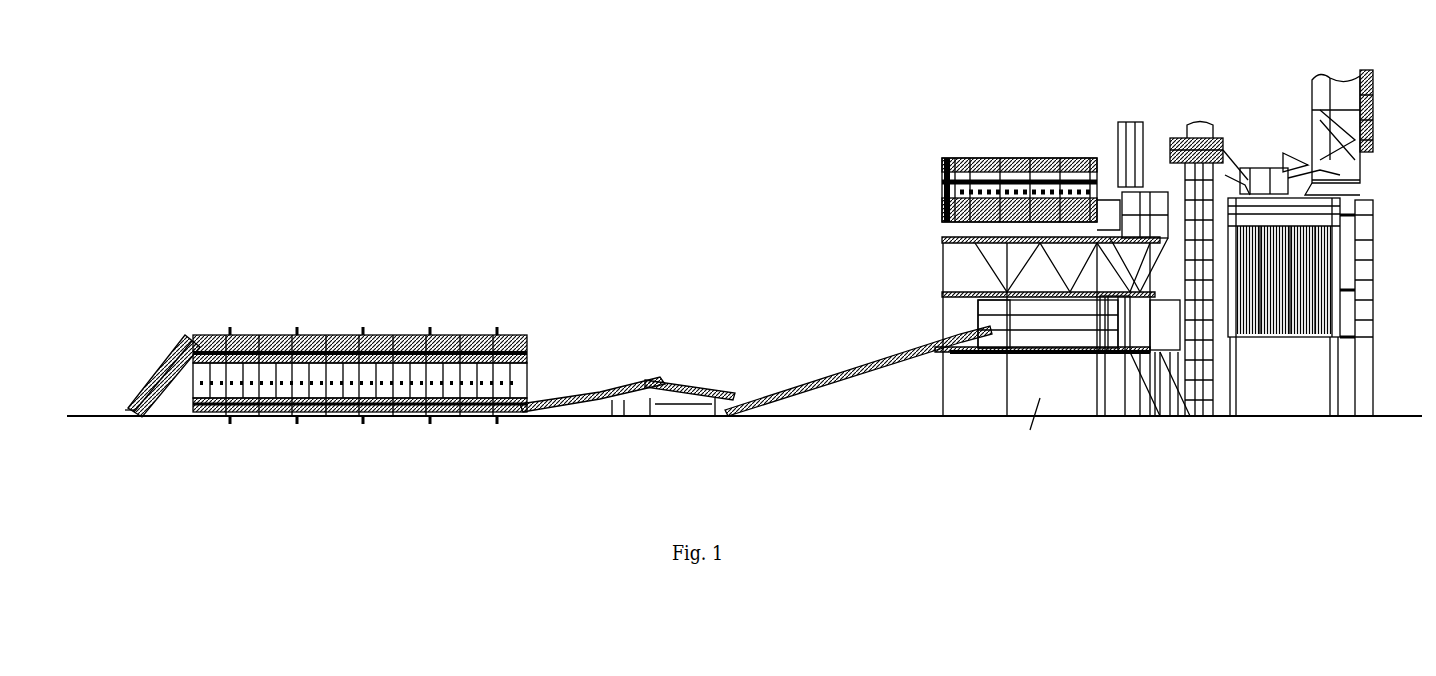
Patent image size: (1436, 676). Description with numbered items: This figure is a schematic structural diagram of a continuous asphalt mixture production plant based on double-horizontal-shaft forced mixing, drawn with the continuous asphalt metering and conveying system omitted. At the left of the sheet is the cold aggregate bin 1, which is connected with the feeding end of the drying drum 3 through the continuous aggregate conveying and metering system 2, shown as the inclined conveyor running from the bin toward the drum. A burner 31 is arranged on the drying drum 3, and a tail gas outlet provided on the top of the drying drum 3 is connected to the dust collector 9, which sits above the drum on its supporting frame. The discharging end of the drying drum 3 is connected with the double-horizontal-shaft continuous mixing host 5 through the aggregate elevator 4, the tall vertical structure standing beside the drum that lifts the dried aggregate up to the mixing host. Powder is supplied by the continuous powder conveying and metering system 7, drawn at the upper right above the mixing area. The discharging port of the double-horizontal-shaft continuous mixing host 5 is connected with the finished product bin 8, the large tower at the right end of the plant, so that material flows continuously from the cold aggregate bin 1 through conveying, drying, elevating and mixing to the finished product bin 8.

The cold aggregate bin 1 is at (352, 335).
The continuous aggregate conveying and metering system 2 is at (675, 362).
The drying drum 3 is at (1055, 330).
The burner 31 is at (1176, 385).
The aggregate elevator 4 is at (1208, 380).
The double-horizontal-shaft continuous mixing host 5 is at (1315, 195).
The continuous powder conveying and metering system 7 is at (1303, 140).
The finished product bin 8 is at (1380, 240).
The dust collector 9 is at (945, 195).